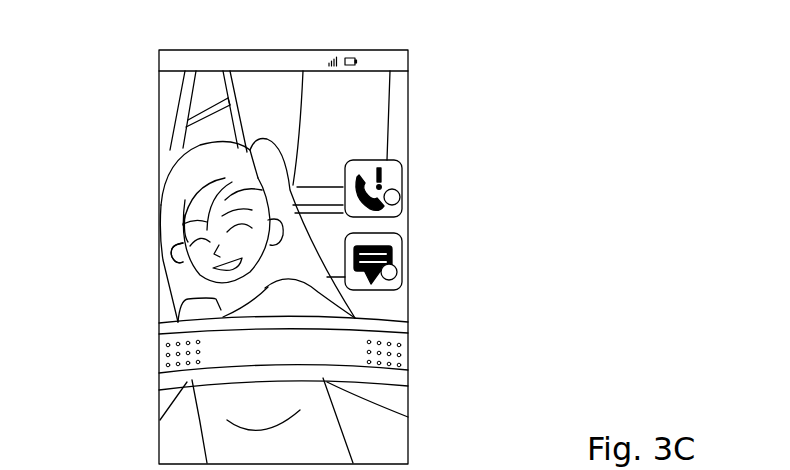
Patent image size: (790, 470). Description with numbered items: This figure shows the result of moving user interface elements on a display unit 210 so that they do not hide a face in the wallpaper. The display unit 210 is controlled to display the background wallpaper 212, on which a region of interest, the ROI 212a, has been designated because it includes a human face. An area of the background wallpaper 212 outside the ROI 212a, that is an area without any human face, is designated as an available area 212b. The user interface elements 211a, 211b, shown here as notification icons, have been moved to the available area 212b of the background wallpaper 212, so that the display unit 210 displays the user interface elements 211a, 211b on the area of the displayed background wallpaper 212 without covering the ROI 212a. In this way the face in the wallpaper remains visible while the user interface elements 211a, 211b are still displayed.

The display unit 210 is at (408, 90).
The user interface element 211a is at (408, 172).
The user interface element 211b is at (408, 257).
The background wallpaper 212 is at (397, 402).
The ROI 212a is at (175, 252).
The available area 212b is at (397, 310).